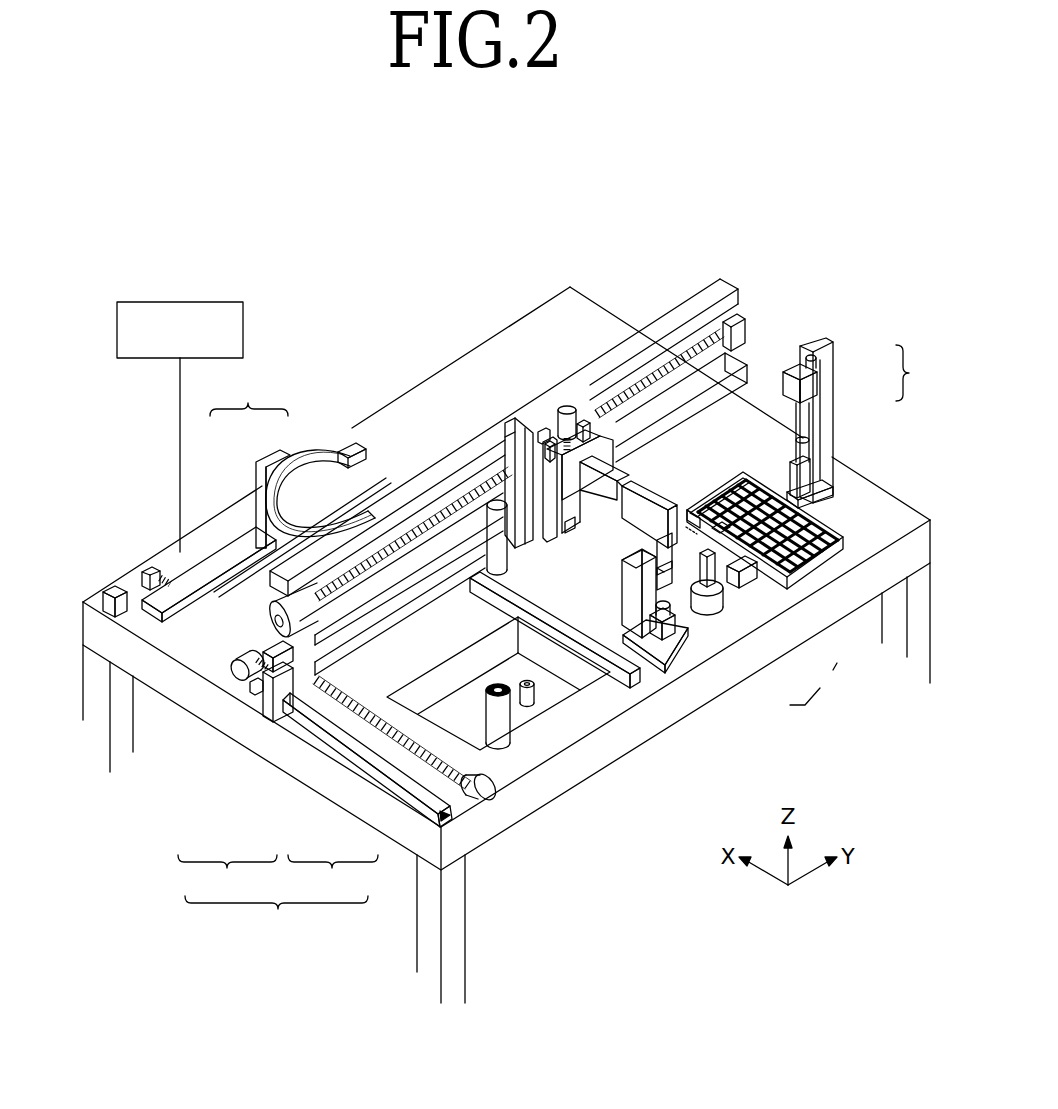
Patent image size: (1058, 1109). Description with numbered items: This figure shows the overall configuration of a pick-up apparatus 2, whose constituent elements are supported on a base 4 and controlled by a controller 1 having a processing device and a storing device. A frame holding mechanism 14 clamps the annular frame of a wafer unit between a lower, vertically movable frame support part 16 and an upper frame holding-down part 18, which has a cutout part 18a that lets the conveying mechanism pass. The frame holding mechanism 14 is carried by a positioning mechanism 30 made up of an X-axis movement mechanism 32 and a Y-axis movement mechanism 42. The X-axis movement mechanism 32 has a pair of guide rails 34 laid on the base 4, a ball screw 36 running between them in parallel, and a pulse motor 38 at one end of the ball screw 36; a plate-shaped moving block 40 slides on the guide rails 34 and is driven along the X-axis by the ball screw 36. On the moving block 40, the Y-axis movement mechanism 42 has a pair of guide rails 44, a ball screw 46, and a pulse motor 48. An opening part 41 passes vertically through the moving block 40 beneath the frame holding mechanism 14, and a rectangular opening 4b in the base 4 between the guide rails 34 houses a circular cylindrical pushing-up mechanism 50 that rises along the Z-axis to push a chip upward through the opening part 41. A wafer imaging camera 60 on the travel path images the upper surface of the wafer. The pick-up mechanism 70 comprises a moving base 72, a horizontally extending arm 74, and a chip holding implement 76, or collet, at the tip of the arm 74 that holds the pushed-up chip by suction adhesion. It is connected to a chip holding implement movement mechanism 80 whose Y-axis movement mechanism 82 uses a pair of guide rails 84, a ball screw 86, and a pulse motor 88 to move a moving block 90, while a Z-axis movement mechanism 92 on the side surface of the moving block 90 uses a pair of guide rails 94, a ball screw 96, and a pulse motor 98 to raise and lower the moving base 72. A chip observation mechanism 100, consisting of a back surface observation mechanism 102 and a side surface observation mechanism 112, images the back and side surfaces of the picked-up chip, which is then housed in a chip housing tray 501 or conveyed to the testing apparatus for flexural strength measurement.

The controller 1 is at (185, 302).
The pick-up apparatus 2 is at (318, 342).
The base 4 is at (422, 393).
The rectangular opening 4b is at (552, 703).
The frame holding mechanism 14 is at (258, 498).
The frame support part 16 is at (240, 540).
The frame holding-down part 18 is at (272, 466).
The cutout part 18a is at (348, 452).
The positioning mechanism 30 is at (377, 756).
The X-axis movement mechanism 32 is at (499, 734).
The guide rails 34 is at (340, 774).
The ball screw 36 is at (350, 762).
The pulse motor 38 is at (462, 798).
The moving block 40 is at (192, 666).
The opening part 41 is at (235, 592).
The Y-axis movement mechanism 42 is at (166, 741).
The guide rails 44 is at (280, 725).
The ball screw 46 is at (262, 683).
The pulse motor 48 is at (235, 680).
The pushing-up mechanism 50 is at (520, 719).
The wafer imaging camera 60 is at (519, 468).
The pick-up mechanism 70 is at (612, 542).
The moving base 72 is at (556, 522).
The arm 74 is at (672, 500).
The chip holding implement 76 is at (672, 577).
The chip holding implement movement mechanism 80 is at (779, 422).
The Y-axis movement mechanism 82 is at (770, 342).
The guide rails 84 is at (740, 362).
The ball screw 86 is at (708, 338).
The pulse motor 88 is at (272, 618).
The moving block 90 is at (545, 432).
The Z-axis movement mechanism 92 is at (640, 473).
The guide rails 94 is at (546, 445).
The ball screw 96 is at (540, 432).
The pulse motor 98 is at (560, 404).
The chip observation mechanism 100 is at (738, 632).
The back surface observation mechanism 102 is at (697, 654).
The side surface observation mechanism 112 is at (745, 614).
The chip housing tray 501 is at (836, 503).